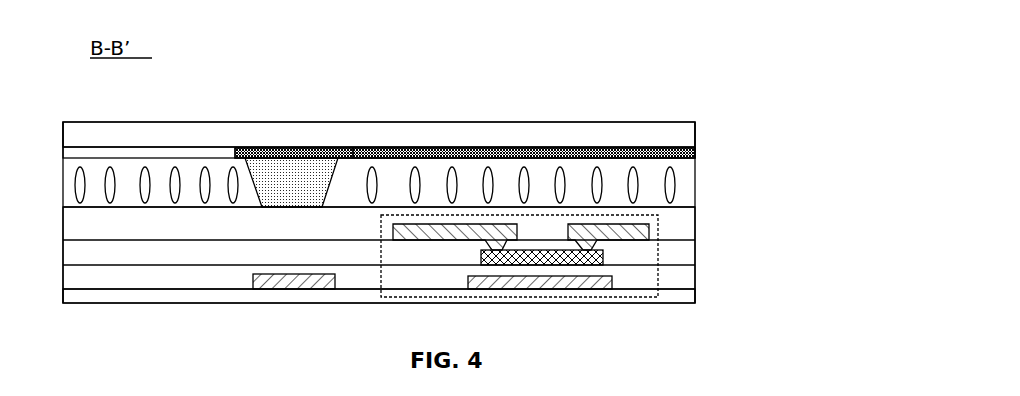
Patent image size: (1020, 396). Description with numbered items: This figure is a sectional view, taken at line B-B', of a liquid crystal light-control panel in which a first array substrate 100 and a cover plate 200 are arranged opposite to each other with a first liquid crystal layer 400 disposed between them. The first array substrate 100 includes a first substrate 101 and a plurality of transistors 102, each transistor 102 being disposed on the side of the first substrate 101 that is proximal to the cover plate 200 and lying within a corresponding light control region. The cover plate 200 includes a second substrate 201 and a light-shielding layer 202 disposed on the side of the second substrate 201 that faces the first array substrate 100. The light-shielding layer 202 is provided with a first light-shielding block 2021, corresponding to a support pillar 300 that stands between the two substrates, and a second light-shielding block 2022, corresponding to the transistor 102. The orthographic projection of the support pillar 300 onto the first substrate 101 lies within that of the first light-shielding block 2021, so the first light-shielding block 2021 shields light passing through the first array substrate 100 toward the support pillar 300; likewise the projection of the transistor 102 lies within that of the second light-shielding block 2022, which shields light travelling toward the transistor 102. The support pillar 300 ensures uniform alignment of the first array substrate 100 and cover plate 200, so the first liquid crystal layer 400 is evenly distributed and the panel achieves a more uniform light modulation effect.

The first array substrate 100 is at (758, 238).
The first substrate 101 is at (670, 297).
The transistor 102 is at (660, 253).
The cover plate 200 is at (770, 127).
The second substrate 201 is at (680, 131).
The light-shielding layer 202 is at (680, 153).
The first light-shielding block 2021 is at (297, 148).
The second light-shielding block 2022 is at (533, 152).
The support pillar 300 is at (270, 176).
The first liquid crystal layer 400 is at (668, 182).